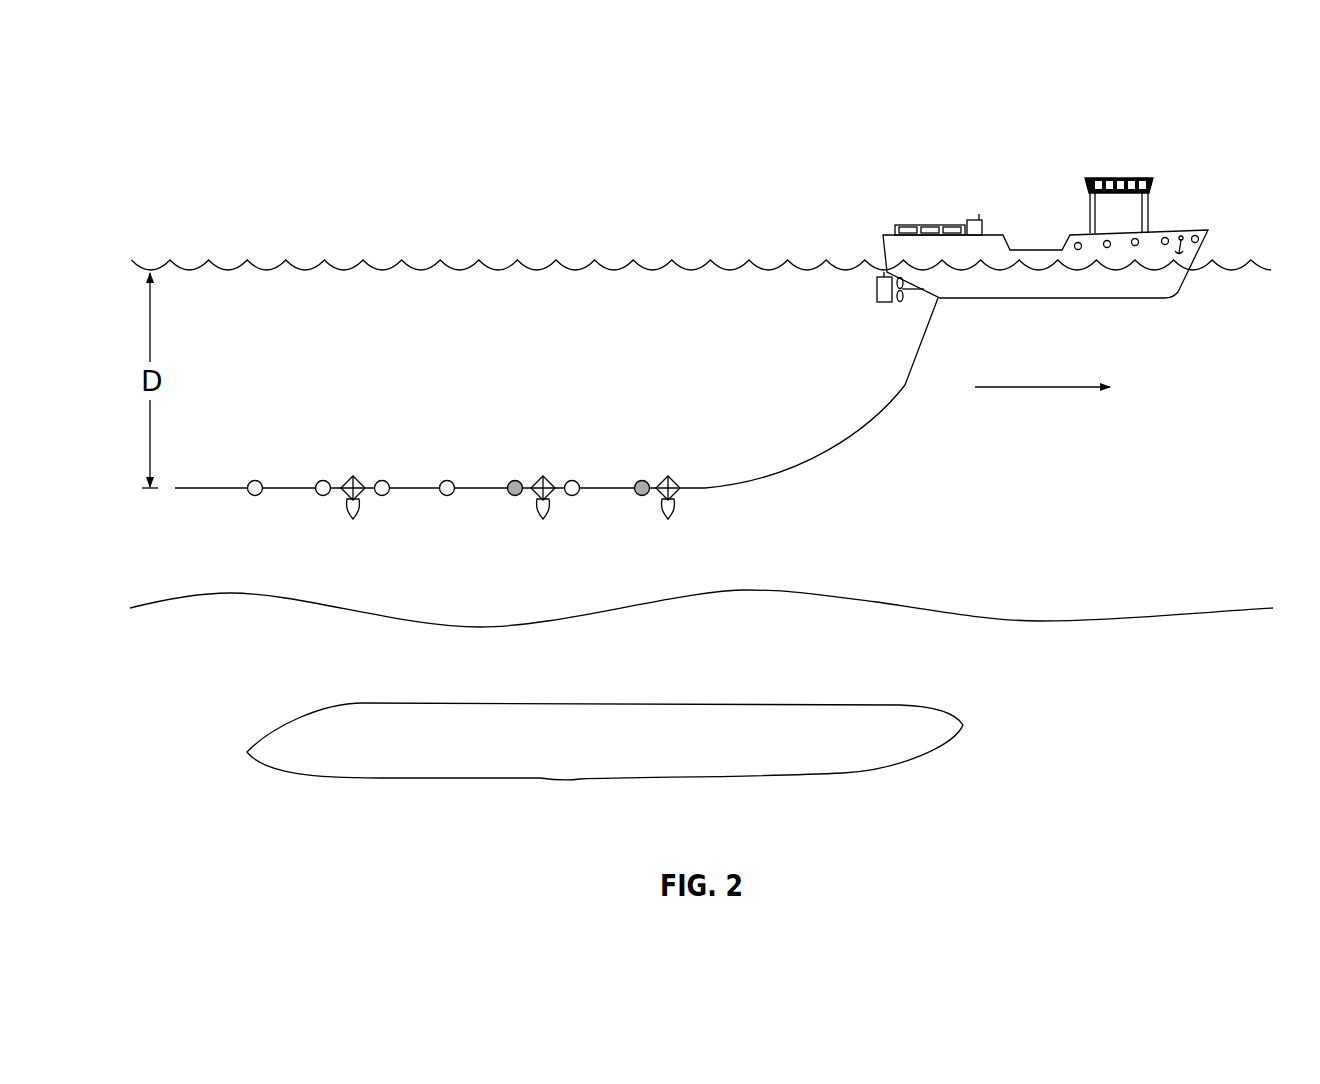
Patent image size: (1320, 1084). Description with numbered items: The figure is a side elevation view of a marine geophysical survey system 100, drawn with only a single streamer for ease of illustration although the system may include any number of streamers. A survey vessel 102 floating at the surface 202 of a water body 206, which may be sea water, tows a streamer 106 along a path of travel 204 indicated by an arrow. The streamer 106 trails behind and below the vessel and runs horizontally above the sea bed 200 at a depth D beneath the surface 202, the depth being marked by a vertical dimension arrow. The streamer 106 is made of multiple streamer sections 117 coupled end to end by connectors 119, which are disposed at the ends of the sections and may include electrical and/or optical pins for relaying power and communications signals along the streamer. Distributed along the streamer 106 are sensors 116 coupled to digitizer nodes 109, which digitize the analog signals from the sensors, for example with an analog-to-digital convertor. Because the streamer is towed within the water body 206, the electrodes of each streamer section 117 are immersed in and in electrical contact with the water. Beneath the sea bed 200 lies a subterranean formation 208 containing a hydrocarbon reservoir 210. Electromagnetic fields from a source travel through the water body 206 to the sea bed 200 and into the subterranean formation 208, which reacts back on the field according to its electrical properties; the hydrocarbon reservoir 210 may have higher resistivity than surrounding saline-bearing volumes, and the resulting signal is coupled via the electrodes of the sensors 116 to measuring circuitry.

The marine geophysical survey system 100 is at (316, 131).
The survey vessel 102 is at (1127, 176).
The streamer 106 is at (190, 489).
The digitizer nodes 109 is at (512, 481).
The sensors 116 is at (445, 481).
The streamer sections 117 is at (283, 503).
The connectors 119 is at (353, 519).
The sea bed 200 is at (877, 602).
The surface 202 is at (420, 268).
The path of travel 204 is at (1080, 383).
The water body 206 is at (1017, 493).
The subterranean formation 208 is at (1017, 670).
The hydrocarbon reservoir 210 is at (392, 758).